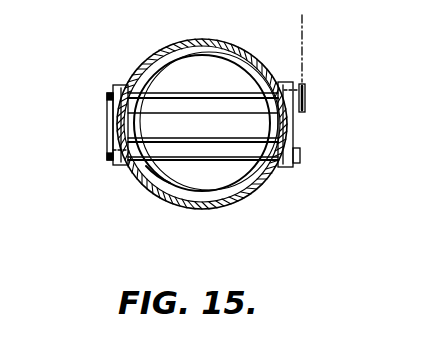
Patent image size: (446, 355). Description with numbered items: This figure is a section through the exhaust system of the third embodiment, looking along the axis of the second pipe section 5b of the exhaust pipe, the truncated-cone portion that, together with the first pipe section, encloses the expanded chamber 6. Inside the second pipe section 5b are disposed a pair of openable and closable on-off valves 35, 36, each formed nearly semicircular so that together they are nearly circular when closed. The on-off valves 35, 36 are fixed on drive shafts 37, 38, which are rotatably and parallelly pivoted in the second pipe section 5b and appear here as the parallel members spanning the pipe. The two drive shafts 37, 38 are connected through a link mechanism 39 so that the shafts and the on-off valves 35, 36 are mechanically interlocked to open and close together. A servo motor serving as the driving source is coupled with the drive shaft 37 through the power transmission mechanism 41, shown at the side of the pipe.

The second pipe section 5b is at (217, 208).
The expanded chamber 6 is at (186, 198).
The on-off valve 35 is at (259, 70).
The on-off valve 36 is at (158, 176).
The drive shaft 37 is at (184, 92).
The drive shaft 38 is at (260, 177).
The link mechanism 39 is at (109, 103).
The power transmission mechanism 41 is at (306, 97).